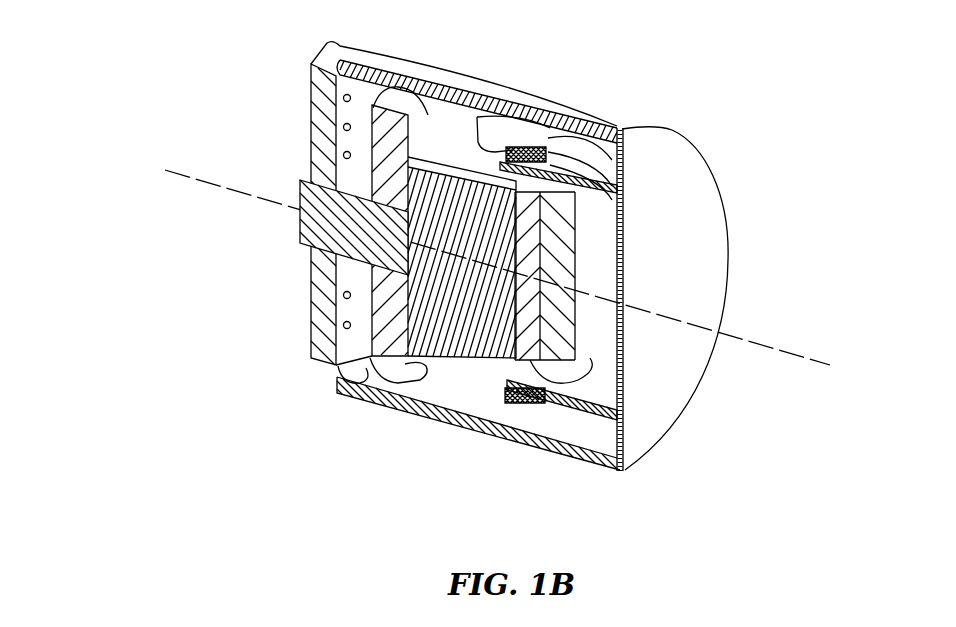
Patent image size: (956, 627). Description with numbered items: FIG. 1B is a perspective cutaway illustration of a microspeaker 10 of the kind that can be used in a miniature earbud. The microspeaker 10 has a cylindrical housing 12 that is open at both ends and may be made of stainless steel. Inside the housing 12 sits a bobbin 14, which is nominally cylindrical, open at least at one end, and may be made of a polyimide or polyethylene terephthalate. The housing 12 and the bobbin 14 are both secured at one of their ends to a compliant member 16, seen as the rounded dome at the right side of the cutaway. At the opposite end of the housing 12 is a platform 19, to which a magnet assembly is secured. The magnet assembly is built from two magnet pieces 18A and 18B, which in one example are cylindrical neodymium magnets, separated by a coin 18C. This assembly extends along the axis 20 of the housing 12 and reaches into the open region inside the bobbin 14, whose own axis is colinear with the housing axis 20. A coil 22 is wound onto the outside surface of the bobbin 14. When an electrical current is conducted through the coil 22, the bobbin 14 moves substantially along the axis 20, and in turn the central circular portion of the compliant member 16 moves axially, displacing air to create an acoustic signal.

The microspeaker 10 is at (777, 167).
The housing 12 is at (511, 92).
The bobbin 14 is at (598, 420).
The compliant member 16 is at (728, 242).
The magnet piece 18A is at (465, 348).
The magnet piece 18B is at (575, 357).
The coin 18C is at (533, 406).
The platform 19 is at (387, 360).
The axis 20 is at (771, 347).
The coil 22 is at (552, 137).